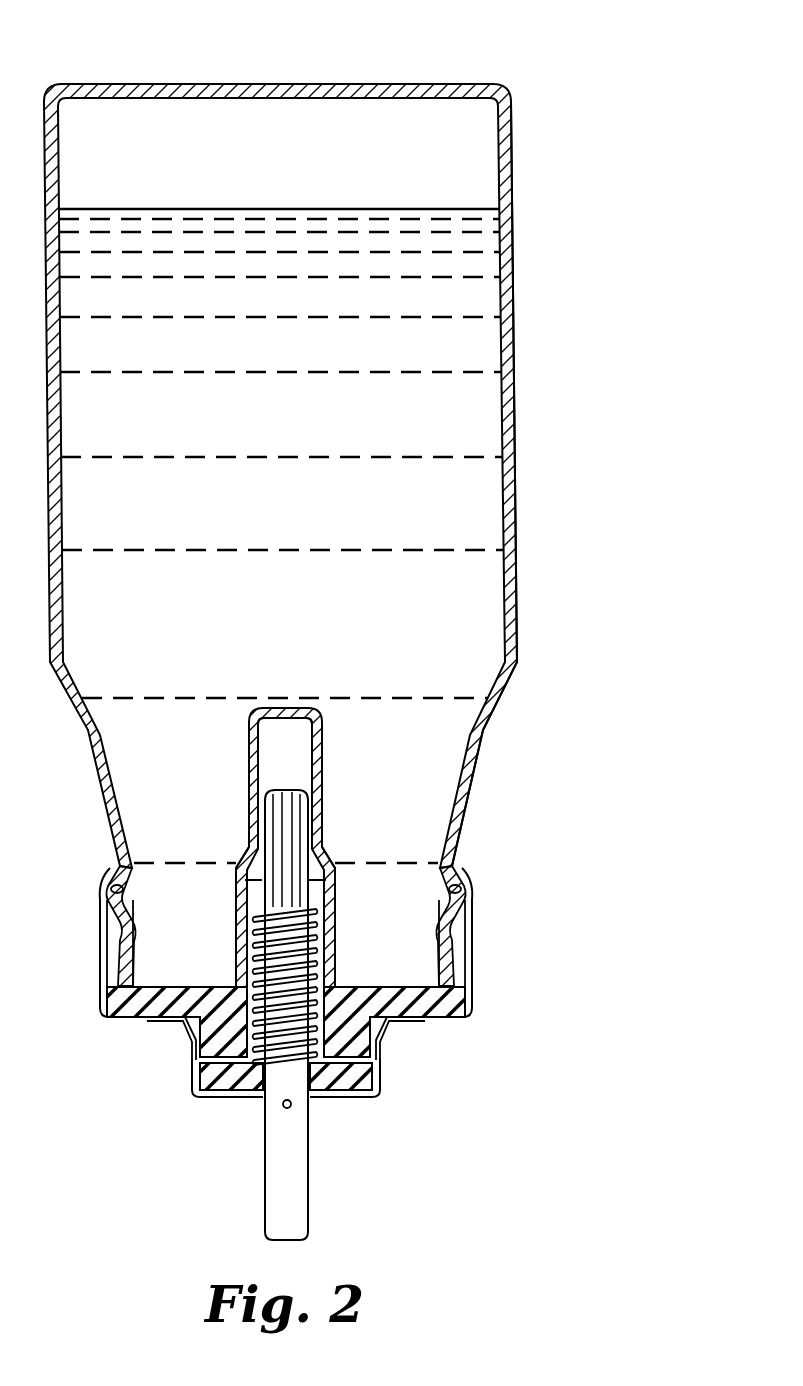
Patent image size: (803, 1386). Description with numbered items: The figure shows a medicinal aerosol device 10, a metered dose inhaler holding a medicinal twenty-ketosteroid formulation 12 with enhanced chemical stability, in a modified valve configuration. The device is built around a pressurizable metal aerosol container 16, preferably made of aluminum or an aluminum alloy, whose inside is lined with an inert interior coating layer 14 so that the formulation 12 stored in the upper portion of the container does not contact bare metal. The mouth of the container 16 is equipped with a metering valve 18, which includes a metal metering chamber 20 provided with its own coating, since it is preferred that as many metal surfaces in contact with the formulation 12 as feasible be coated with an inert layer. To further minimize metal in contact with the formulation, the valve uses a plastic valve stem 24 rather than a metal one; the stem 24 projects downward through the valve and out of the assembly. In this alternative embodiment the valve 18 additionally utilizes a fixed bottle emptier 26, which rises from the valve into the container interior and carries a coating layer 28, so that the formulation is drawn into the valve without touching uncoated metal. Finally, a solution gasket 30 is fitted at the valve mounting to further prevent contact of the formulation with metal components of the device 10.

The medicinal aerosol device 10 is at (540, 48).
The formulation 12 is at (207, 222).
The inert interior coating layer 14 is at (500, 150).
The pressurizable metal aerosol container 16 is at (515, 234).
The metering valve 18 is at (188, 1103).
The metal metering chamber 20 is at (249, 858).
The plastic valve stem 24 is at (303, 818).
The fixed bottle emptier 26 is at (258, 757).
The coating layer 28 is at (320, 758).
The solution gasket 30 is at (425, 1005).